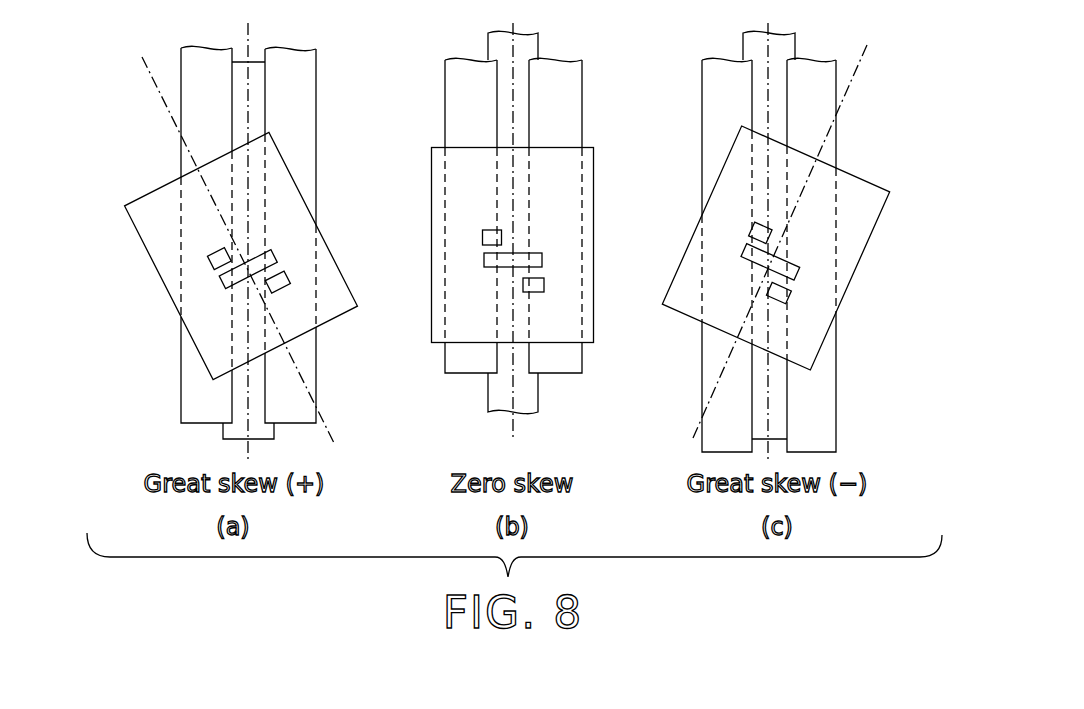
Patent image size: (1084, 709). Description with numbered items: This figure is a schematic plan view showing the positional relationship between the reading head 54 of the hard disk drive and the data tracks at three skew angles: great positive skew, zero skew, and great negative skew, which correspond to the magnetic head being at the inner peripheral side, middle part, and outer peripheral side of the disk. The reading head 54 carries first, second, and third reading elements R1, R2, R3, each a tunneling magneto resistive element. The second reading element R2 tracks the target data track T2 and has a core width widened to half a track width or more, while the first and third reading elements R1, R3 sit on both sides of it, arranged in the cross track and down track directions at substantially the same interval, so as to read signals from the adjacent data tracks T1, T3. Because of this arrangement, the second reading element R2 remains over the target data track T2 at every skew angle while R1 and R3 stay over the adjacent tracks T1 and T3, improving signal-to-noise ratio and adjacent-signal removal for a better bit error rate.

The reading head 54 is at (213, 290).
The first reading element R1 is at (212, 252).
The second reading element R2 is at (269, 258).
The third reading element R3 is at (283, 288).
The data track T1 is at (192, 405).
The data track T2 is at (222, 432).
The data track T3 is at (300, 420).